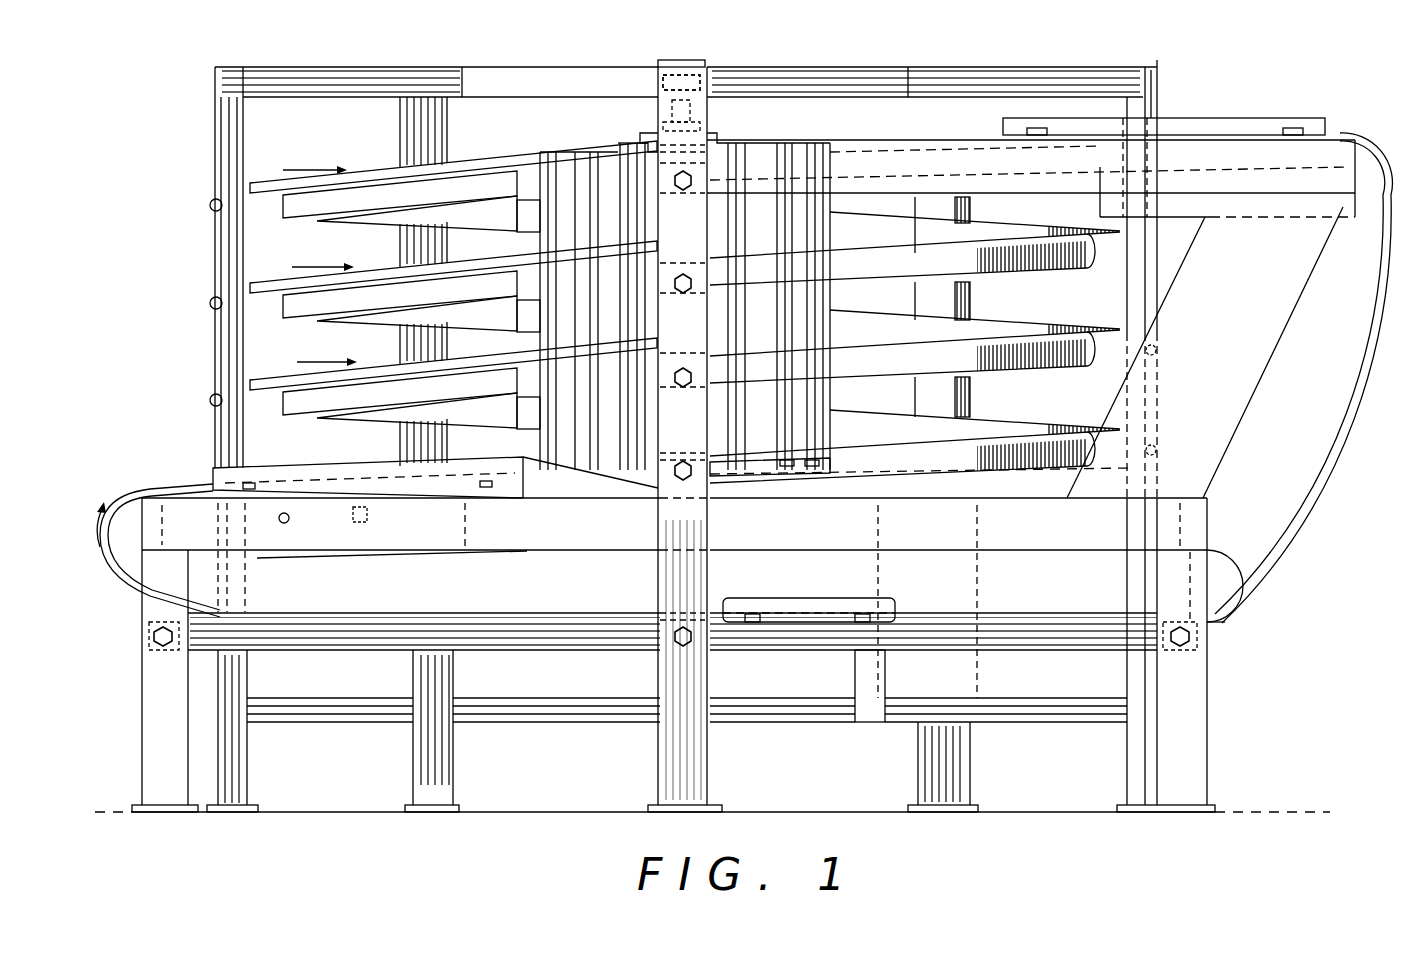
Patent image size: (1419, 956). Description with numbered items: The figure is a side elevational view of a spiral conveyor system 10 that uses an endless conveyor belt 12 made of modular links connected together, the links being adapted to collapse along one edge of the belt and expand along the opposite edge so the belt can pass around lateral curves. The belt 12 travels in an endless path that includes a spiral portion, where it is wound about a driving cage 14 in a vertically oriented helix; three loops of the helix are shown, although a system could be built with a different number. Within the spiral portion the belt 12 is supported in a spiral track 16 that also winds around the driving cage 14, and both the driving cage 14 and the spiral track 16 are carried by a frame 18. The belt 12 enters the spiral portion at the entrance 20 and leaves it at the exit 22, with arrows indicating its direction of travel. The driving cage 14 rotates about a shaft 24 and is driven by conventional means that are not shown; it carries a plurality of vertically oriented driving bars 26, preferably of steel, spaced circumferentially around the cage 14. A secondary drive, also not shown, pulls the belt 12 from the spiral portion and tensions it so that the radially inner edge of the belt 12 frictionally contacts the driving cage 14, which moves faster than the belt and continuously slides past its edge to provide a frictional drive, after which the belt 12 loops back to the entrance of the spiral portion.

The spiral conveyor system 10 is at (1058, 62).
The endless conveyor belt 12 is at (493, 175).
The driving cage 14 is at (588, 143).
The spiral track 16 is at (366, 190).
The frame 18 is at (210, 124).
The spiral portion entrance 20 is at (203, 456).
The spiral portion exit 22 is at (1177, 113).
The shaft 24 is at (712, 110).
The driving bars 26 is at (560, 343).